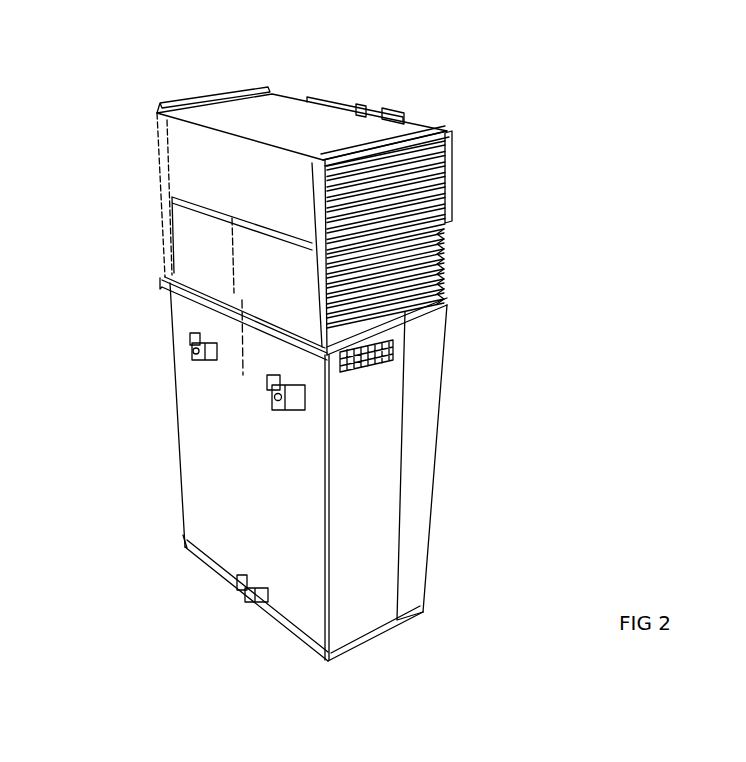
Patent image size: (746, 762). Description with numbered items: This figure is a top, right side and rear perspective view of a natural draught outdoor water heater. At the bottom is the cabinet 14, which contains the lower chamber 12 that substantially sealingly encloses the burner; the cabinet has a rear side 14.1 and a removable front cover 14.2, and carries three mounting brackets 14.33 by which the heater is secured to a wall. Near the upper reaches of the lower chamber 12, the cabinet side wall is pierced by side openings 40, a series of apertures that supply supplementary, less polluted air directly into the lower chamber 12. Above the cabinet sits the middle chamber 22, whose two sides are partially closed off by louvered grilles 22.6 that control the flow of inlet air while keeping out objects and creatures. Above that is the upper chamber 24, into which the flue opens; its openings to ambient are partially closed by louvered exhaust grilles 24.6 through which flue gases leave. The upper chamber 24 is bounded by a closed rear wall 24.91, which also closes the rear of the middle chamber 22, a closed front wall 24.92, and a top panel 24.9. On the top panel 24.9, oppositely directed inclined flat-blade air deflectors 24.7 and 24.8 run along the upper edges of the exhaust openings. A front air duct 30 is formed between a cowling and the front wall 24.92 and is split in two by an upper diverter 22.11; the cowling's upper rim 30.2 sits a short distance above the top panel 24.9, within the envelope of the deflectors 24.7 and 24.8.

The lower chamber 12 is at (408, 492).
The cabinet 14 is at (297, 583).
The rear side 14.1 is at (370, 618).
The front side or cover 14.2 is at (417, 578).
The mounting brackets 14.33 is at (257, 578).
The middle chamber 22 is at (333, 280).
The upper diverter 22.11 is at (363, 108).
The grilles 22.6 is at (437, 263).
The upper chamber 24 is at (443, 203).
The exhaust grilles 24.6 is at (395, 190).
The air deflector 24.7 is at (252, 95).
The air deflector 24.8 is at (423, 128).
The top panel 24.9 is at (300, 110).
The rear wall 24.91 is at (193, 161).
The front closed wall 24.92 is at (453, 197).
The front air duct 30 is at (397, 107).
The upper rim 30.2 is at (347, 100).
The side openings 40 is at (367, 363).